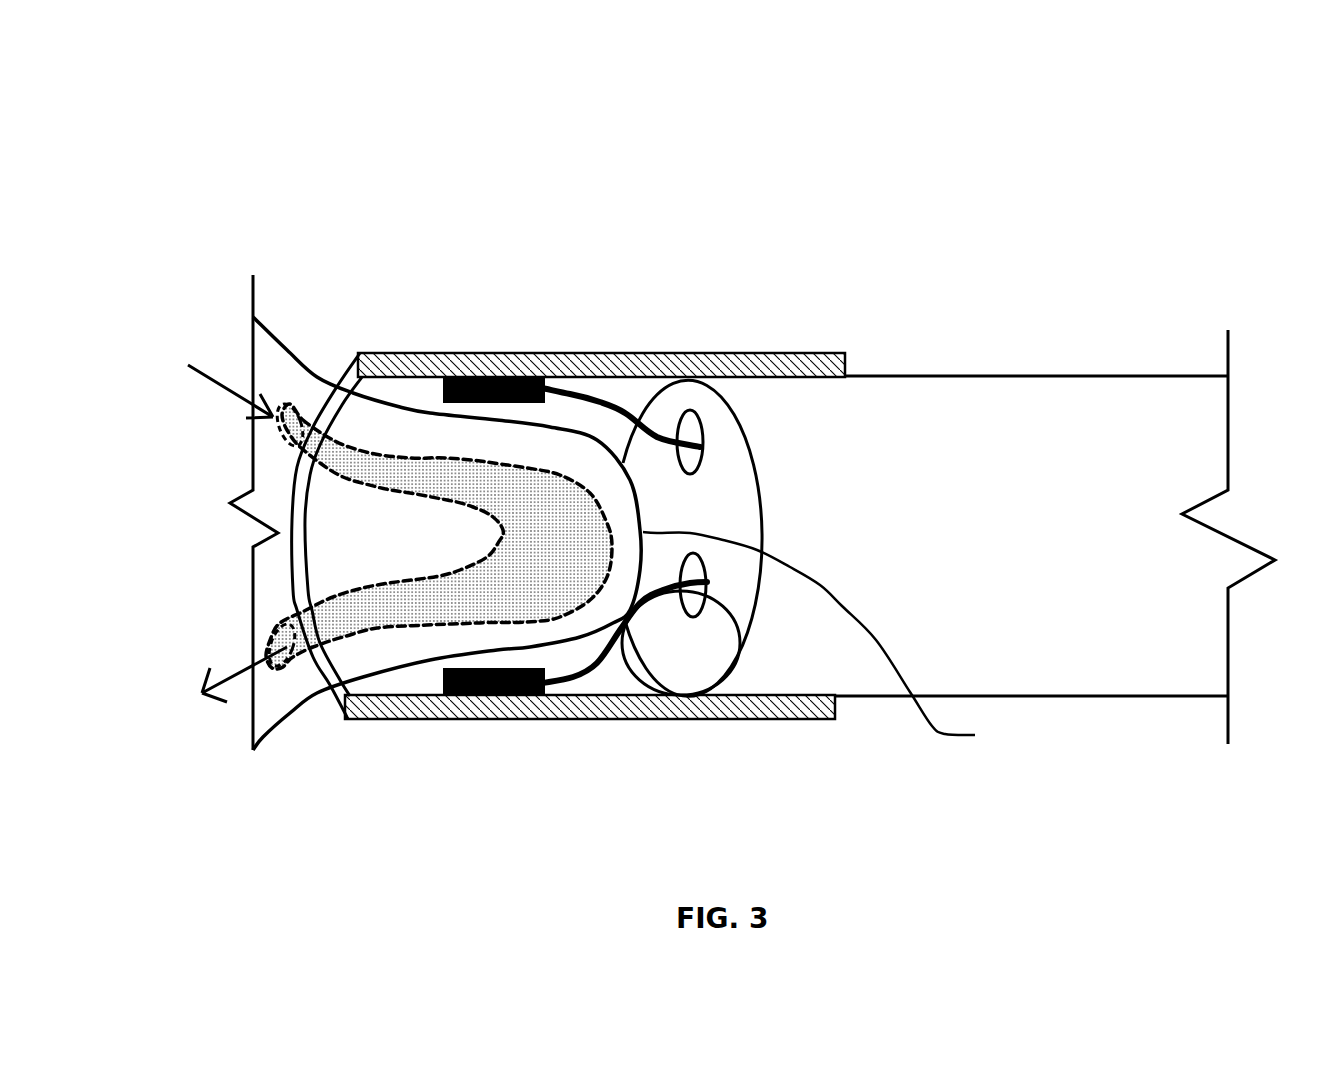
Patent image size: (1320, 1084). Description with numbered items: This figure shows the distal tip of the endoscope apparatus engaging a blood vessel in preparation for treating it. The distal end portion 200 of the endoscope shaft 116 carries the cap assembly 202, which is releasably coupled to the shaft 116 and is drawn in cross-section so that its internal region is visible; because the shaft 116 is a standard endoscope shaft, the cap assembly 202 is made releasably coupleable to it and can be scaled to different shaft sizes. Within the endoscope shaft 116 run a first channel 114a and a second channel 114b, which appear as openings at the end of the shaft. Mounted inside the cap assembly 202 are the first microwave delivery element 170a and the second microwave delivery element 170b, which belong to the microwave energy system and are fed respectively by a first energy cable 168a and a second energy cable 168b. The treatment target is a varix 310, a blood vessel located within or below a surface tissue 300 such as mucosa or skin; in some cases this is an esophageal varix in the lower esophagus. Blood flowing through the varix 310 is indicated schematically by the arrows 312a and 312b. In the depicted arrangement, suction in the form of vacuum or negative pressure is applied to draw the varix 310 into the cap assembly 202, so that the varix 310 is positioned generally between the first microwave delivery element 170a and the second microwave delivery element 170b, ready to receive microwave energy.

The distal end portion 200 is at (1088, 134).
The endoscope shaft 116 is at (1024, 375).
The cap assembly 202 is at (763, 353).
The first microwave delivery element 170a is at (443, 390).
The second microwave delivery element 170b is at (443, 682).
The first energy cable 168a is at (597, 398).
The second energy cable 168b is at (590, 675).
The first channel 114a is at (703, 420).
The second channel 114b is at (738, 650).
The surface tissue 300 is at (280, 333).
The varix 310 is at (553, 473).
The arrow 312a is at (220, 388).
The arrow 312b is at (220, 680).